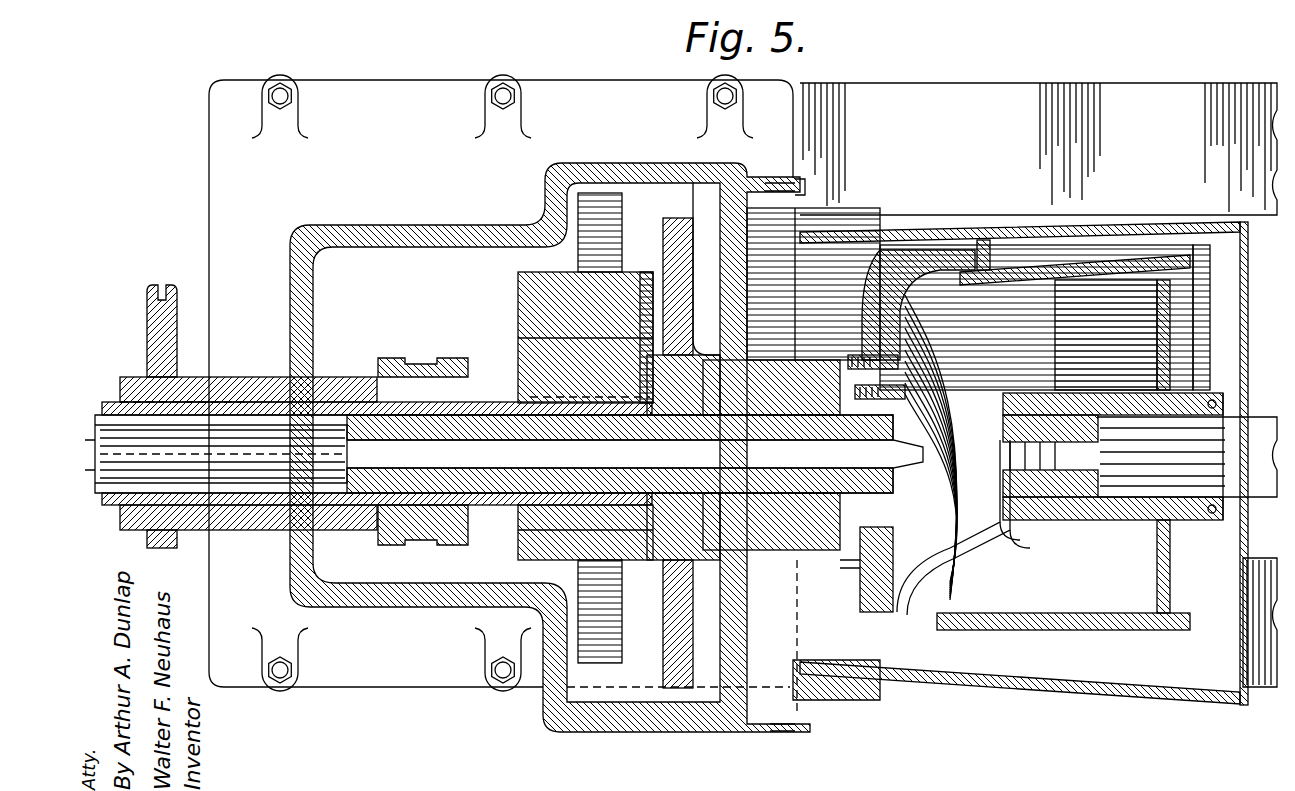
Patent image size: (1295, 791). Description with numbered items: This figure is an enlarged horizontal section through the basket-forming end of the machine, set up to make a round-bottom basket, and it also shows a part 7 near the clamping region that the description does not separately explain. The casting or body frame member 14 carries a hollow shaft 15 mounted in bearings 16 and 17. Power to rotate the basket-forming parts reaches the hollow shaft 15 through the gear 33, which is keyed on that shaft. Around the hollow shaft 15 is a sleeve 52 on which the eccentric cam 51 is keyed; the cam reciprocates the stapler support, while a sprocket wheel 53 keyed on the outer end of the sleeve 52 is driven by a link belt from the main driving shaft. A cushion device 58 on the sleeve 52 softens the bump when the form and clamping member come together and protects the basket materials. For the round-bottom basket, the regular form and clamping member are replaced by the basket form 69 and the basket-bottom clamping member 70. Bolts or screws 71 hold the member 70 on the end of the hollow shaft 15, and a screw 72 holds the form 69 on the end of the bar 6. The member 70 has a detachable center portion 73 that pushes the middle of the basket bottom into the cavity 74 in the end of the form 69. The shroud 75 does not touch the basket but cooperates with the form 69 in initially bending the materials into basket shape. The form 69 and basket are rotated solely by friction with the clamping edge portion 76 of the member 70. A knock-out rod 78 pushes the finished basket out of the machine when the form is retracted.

The bar 6 is at (1252, 490).
The bracket 7 is at (852, 550).
The casting or body frame member 14 is at (648, 165).
The hollow shaft 15 is at (315, 452).
The bearing 16 is at (282, 382).
The bearing 17 is at (805, 540).
The gear 33 is at (672, 690).
The eccentric cam 51 is at (518, 342).
The sleeve 52 is at (518, 527).
The sprocket wheel 53 is at (178, 287).
The cushion device 58 is at (422, 362).
The basket form 69 is at (1165, 352).
The basket-bottom clamping member 70 is at (933, 252).
The bolts or screws 71 is at (870, 352).
The screw 72 is at (1040, 497).
The detachable center portion 73 is at (942, 520).
The cavity 74 is at (990, 515).
The shroud 75 is at (1078, 692).
The clamping edge portion 76 is at (985, 242).
The knock-out rod 78 is at (620, 454).